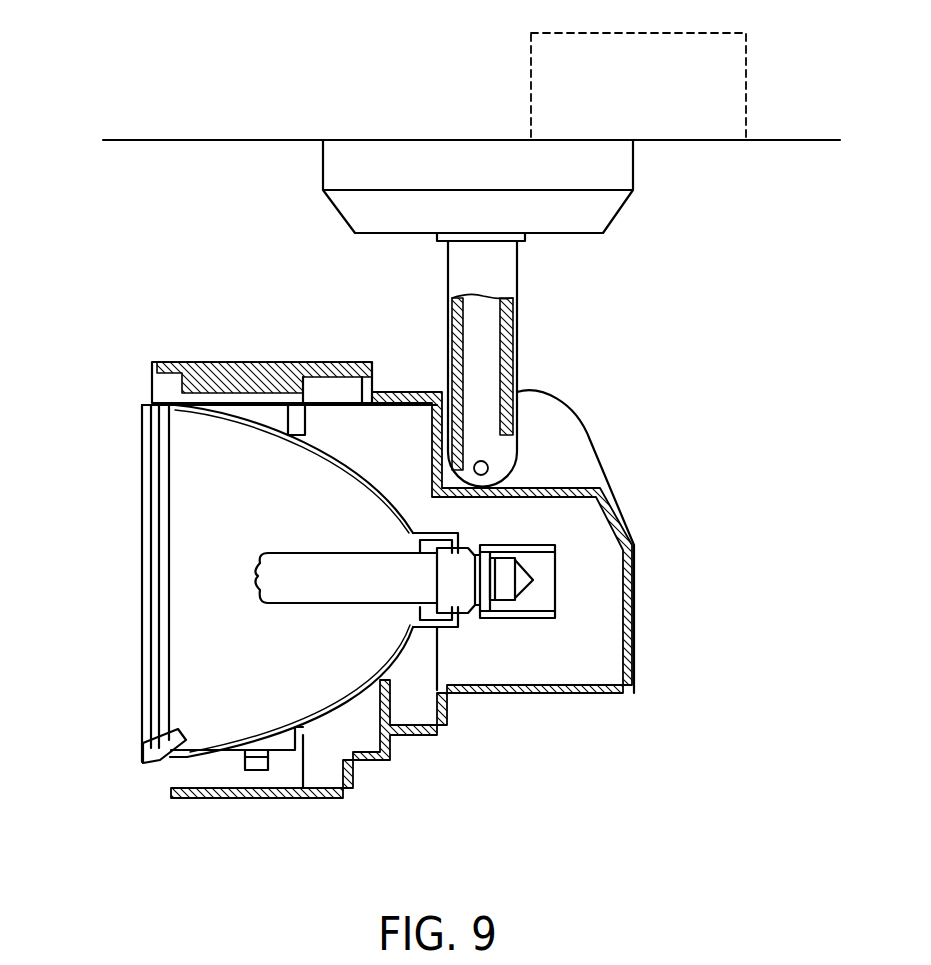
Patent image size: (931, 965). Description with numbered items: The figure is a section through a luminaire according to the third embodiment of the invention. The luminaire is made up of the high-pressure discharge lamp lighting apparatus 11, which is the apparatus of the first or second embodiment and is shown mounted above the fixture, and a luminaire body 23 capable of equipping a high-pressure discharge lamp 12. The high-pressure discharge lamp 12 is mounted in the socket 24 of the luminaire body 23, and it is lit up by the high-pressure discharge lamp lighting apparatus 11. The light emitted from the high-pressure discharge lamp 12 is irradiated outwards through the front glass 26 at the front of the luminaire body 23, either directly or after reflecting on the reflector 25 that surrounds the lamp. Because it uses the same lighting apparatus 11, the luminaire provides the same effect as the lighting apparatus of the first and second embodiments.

The high-pressure discharge lamp lighting apparatus 11 is at (747, 88).
The high-pressure discharge lamp 12 is at (312, 553).
The luminaire body 23 is at (592, 437).
The socket 24 is at (540, 545).
The reflector 25 is at (333, 460).
The front glass 26 is at (140, 608).